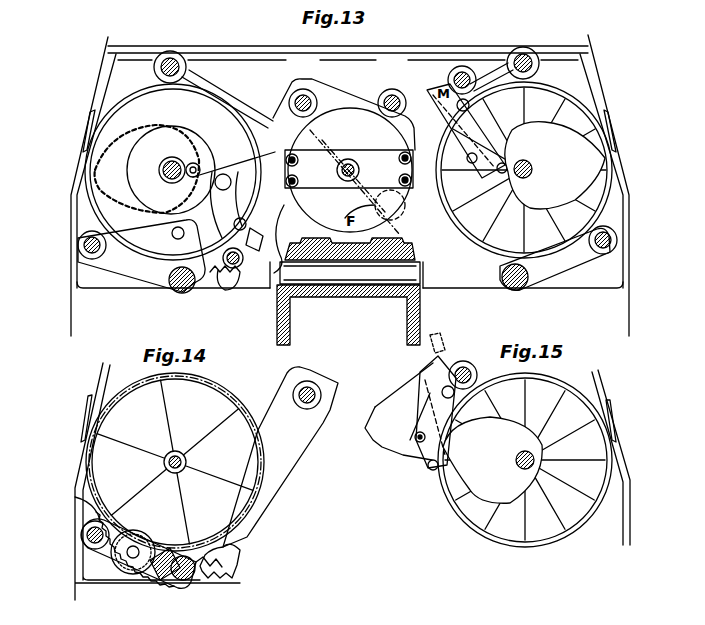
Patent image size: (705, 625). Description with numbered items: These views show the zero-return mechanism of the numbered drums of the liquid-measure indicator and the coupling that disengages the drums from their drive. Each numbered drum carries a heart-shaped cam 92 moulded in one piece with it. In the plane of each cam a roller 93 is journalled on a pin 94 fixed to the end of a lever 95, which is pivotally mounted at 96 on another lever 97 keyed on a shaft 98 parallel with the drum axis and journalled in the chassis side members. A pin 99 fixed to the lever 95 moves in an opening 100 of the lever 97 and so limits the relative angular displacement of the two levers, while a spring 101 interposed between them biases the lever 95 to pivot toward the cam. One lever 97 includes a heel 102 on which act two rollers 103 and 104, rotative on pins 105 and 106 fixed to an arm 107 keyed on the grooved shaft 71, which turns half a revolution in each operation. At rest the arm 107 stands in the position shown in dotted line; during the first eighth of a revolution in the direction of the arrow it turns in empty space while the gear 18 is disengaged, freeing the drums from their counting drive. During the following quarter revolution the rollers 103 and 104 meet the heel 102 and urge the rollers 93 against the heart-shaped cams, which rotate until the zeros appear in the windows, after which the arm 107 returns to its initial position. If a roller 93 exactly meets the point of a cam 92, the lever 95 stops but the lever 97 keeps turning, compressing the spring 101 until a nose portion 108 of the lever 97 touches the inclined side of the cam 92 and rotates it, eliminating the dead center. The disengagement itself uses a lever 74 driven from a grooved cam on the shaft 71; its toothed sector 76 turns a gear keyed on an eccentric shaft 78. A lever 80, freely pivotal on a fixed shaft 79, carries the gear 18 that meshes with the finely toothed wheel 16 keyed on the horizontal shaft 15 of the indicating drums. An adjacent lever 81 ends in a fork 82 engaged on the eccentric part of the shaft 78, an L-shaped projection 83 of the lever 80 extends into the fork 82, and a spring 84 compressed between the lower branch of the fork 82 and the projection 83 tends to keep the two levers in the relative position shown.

In FIG. 14, the horizontal shaft 15 is at (168, 452).
In FIG. 14, the finely toothed wheel 16 is at (135, 510).
In FIG. 14, the gear 18 is at (112, 580).
In FIG. 13, the grooved shaft 71 is at (357, 173).
In FIG. 14, the lever 74 is at (288, 440).
In FIG. 14, the toothed sector 76 is at (240, 568).
In FIG. 14, the shaft 78 is at (205, 575).
In FIG. 14, the fixed shaft 79 is at (82, 536).
In FIG. 14, the lever 80 is at (75, 497).
In FIG. 14, the lever 81 is at (95, 555).
In FIG. 14, the fork 82 is at (188, 582).
In FIG. 14, the L-shaped projection 83 is at (165, 547).
In FIG. 14, the spring 84 is at (160, 582).
In FIG. 13, the heart-shaped cam 92 is at (95, 165).
In FIG. 15, the heart-shaped cam 92 is at (483, 497).
In FIG. 13, the roller 93 is at (185, 150).
In FIG. 15, the roller 93 is at (432, 472).
In FIG. 13, the pin 94 is at (185, 192).
In FIG. 13, the lever 95 is at (212, 222).
In FIG. 15, the lever 95 is at (428, 372).
In FIG. 13, the pivot 96 is at (249, 236).
In FIG. 15, the pivot 96 is at (455, 398).
In FIG. 13, the lever 97 is at (283, 205).
In FIG. 15, the lever 97 is at (368, 447).
In FIG. 13, the shaft 98 is at (220, 285).
In FIG. 15, the shaft 98 is at (492, 378).
In FIG. 13, the pin 99 is at (250, 190).
In FIG. 15, the pin 99 is at (412, 445).
In FIG. 13, the opening 100 is at (225, 175).
In FIG. 15, the opening 100 is at (446, 412).
In FIG. 13, the spring 101 is at (240, 282).
In FIG. 15, the spring 101 is at (435, 362).
In FIG. 13, the heel 102 is at (283, 162).
In FIG. 15, the heel 102 is at (375, 418).
In FIG. 13, the roller 103 is at (298, 160).
In FIG. 13, the roller 104 is at (298, 181).
In FIG. 13, the pin 105 is at (290, 148).
In FIG. 13, the pin 106 is at (340, 188).
In FIG. 13, the arm 107 is at (392, 153).
In FIG. 15, the nose portion 108 is at (455, 448).